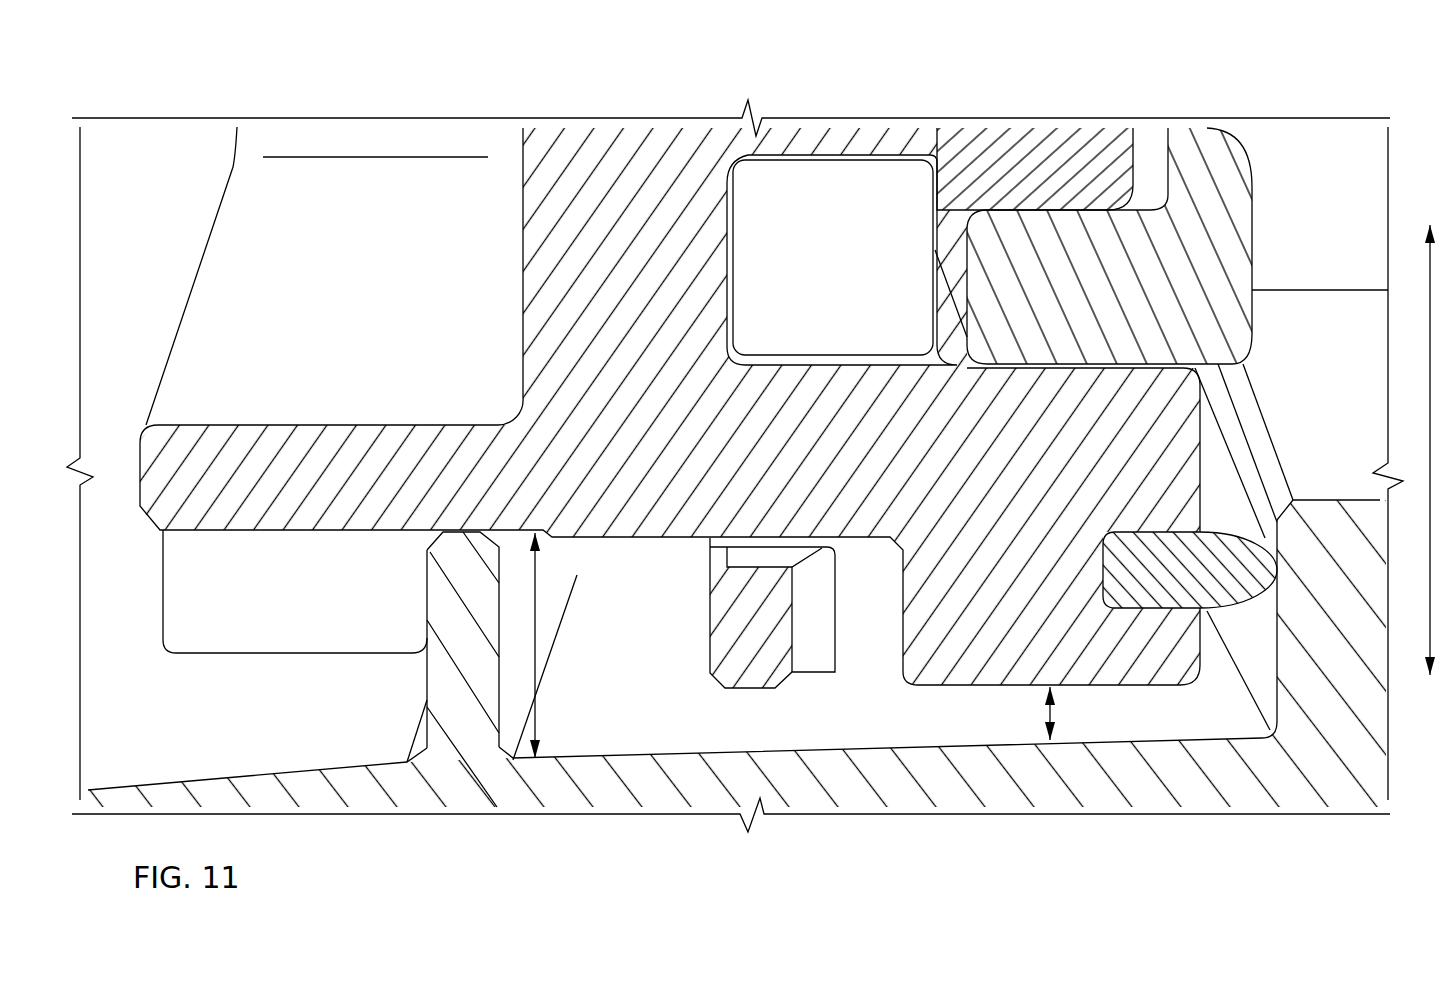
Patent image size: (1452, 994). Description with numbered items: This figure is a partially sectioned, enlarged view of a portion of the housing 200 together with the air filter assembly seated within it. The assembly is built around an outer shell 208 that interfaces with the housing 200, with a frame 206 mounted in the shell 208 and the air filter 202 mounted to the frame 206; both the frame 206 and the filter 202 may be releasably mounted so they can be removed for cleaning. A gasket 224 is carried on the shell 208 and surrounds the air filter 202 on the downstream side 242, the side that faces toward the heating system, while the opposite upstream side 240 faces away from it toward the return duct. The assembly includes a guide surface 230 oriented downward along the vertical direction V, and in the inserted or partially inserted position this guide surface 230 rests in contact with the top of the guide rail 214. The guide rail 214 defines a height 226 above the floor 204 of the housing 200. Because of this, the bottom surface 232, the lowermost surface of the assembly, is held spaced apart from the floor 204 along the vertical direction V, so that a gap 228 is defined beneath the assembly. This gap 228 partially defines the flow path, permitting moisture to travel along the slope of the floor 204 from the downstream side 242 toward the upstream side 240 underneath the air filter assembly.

The housing 200 is at (663, 800).
The air filter 202 is at (1043, 130).
The floor 204 is at (813, 727).
The frame 206 is at (1240, 180).
The outer shell 208 is at (635, 133).
The guide rail 214 is at (442, 673).
The gasket 224 is at (1227, 483).
The height 226 is at (537, 612).
The gap 228 is at (1047, 713).
The guide surface 230 is at (302, 548).
The bottom surface 232 is at (1120, 700).
The upstream side 240 is at (185, 253).
The downstream side 242 is at (1265, 248).
The vertical direction V is at (1429, 450).